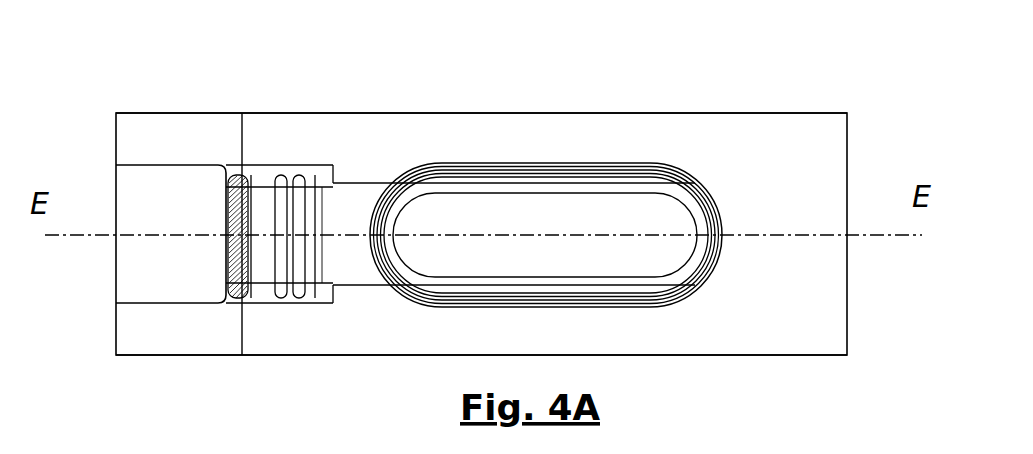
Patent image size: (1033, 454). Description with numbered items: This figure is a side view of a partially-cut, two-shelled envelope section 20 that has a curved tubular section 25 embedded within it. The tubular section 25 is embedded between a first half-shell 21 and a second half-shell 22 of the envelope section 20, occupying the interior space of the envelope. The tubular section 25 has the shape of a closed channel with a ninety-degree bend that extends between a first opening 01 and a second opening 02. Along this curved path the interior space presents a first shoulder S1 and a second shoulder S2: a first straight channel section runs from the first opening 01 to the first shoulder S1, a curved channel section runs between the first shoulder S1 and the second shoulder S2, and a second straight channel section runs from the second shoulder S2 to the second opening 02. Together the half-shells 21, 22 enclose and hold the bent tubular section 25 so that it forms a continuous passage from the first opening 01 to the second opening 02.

The two-shelled envelope section 20 is at (724, 108).
The second half-shell 22 is at (637, 134).
The first half-shell 21 is at (703, 327).
The second opening 02 is at (115, 201).
The second shoulder S2 is at (334, 182).
The curved tubular section 25 is at (350, 245).
The first opening 01 is at (505, 245).
The first shoulder S1 is at (703, 191).